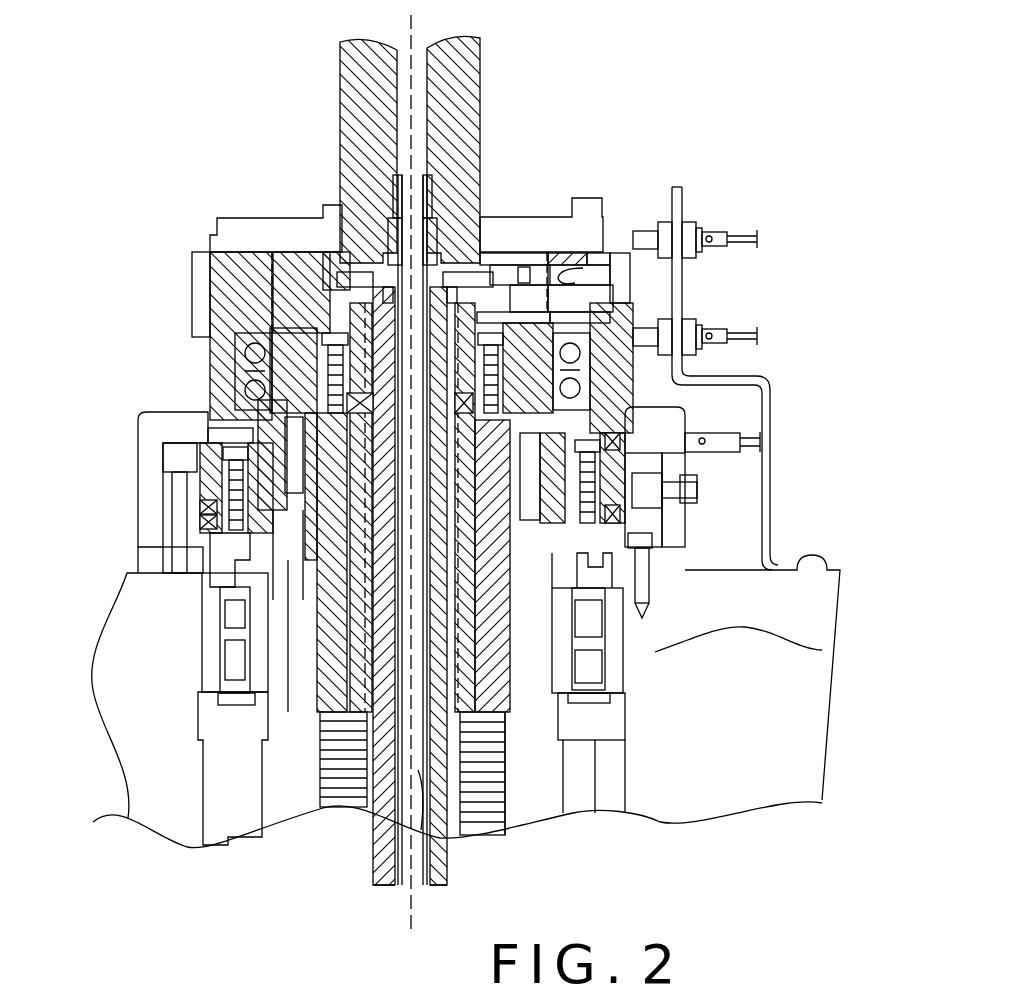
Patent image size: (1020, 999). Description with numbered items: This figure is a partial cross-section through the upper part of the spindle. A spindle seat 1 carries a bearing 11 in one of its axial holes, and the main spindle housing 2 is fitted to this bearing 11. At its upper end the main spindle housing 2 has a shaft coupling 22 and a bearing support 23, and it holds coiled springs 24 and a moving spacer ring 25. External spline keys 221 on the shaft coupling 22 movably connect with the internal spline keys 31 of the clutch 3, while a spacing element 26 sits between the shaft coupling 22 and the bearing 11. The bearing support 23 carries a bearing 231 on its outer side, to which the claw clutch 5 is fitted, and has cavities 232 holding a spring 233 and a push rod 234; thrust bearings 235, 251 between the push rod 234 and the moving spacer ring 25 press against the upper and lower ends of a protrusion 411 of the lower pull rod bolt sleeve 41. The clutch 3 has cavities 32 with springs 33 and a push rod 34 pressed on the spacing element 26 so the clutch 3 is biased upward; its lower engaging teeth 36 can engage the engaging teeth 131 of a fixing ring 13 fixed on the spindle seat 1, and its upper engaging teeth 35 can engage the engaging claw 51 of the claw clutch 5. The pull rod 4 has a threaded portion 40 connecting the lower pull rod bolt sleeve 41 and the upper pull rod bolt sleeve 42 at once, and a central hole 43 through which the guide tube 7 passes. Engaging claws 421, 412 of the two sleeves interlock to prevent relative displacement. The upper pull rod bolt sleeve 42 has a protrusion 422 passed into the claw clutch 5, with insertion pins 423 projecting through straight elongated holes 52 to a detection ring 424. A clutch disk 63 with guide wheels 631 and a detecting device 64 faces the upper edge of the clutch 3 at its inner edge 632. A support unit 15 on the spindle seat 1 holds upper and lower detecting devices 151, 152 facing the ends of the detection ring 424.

The spindle seat 1 is at (773, 800).
The bearing 11 is at (812, 652).
The fixing ring 13 is at (657, 563).
The engaging teeth 131 is at (170, 510).
The support unit 15 is at (767, 445).
The upper detecting device 151 is at (745, 235).
The lower detecting device 152 is at (738, 335).
The main spindle housing 2 is at (555, 815).
The shaft coupling 22 is at (212, 300).
The external spline keys 221 is at (203, 575).
The bearing support 23 is at (287, 273).
The bearing 231 is at (580, 353).
The cavities 232 is at (490, 335).
The spring 233 is at (495, 345).
The push rod 234 is at (585, 310).
The thrust bearing 235 is at (215, 410).
The coiled springs 24 is at (498, 818).
The moving spacer ring 25 is at (497, 612).
The thrust bearing 251 is at (495, 525).
The spacing element 26 is at (145, 590).
The clutch 3 is at (713, 438).
The internal spline keys 31 is at (240, 470).
The cavities 32 is at (200, 455).
The springs 33 is at (200, 505).
The push rod 34 is at (200, 520).
The upper engaging teeth 35 is at (212, 440).
The lower engaging teeth 36 is at (165, 490).
The pull rod 4 is at (440, 830).
The threaded portion 40 is at (455, 630).
The lower pull rod bolt sleeve 41 is at (205, 585).
The protrusion 411 is at (335, 430).
The engaging claw 412 is at (330, 340).
The upper pull rod bolt sleeve 42 is at (478, 275).
The engaging claw 421 is at (297, 340).
The protrusion 422 is at (230, 283).
The insertion pins 423 is at (600, 320).
The detection ring 424 is at (623, 317).
The central hole 43 is at (419, 868).
The claw clutch 5 is at (225, 290).
The engaging claw 51 is at (225, 435).
The straight elongated holes 52 is at (578, 272).
The clutch disk 63 is at (678, 522).
The guide wheels 631 is at (655, 492).
The inner edge 632 is at (175, 450).
The detecting device 64 is at (662, 487).
The guide tube 7 is at (405, 825).